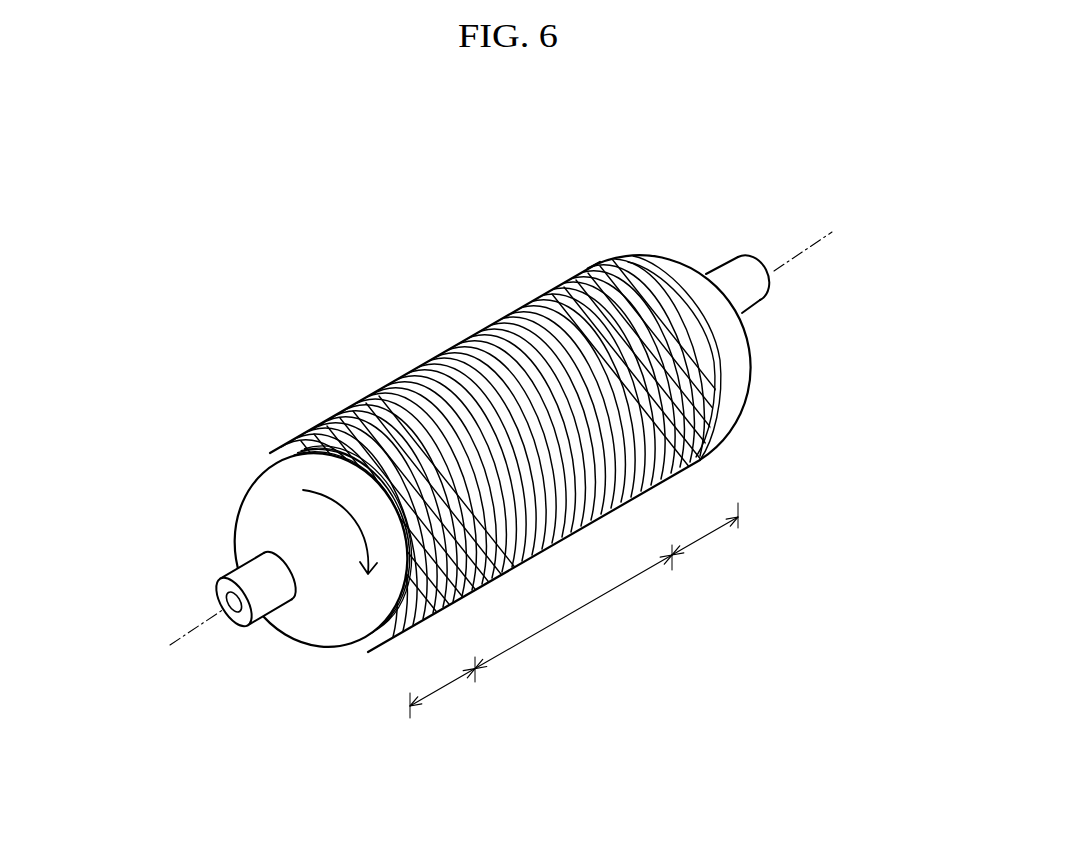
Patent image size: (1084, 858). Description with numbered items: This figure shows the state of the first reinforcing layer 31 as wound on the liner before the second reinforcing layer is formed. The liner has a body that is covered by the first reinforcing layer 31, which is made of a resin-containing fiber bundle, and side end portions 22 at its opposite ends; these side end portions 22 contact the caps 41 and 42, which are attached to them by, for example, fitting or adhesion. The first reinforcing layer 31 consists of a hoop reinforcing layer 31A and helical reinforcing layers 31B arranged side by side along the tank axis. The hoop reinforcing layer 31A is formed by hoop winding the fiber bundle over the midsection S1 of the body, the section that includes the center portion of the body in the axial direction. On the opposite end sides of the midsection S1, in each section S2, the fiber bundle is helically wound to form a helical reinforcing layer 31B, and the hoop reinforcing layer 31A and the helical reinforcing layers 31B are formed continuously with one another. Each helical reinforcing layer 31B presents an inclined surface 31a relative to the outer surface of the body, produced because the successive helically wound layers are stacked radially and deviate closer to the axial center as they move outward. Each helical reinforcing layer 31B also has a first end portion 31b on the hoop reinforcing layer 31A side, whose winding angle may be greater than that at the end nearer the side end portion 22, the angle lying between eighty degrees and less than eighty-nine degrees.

The side end portion 22 is at (742, 356).
The first reinforcing layer 31 is at (590, 198).
The hoop reinforcing layer 31A is at (449, 358).
The helical reinforcing layer 31B is at (590, 276).
The inclined surface 31a is at (550, 537).
The first end portion 31b is at (704, 452).
The cap 41 is at (240, 608).
The cap 42 is at (742, 270).
The midsection S1 is at (573, 613).
The section S2 is at (574, 614).